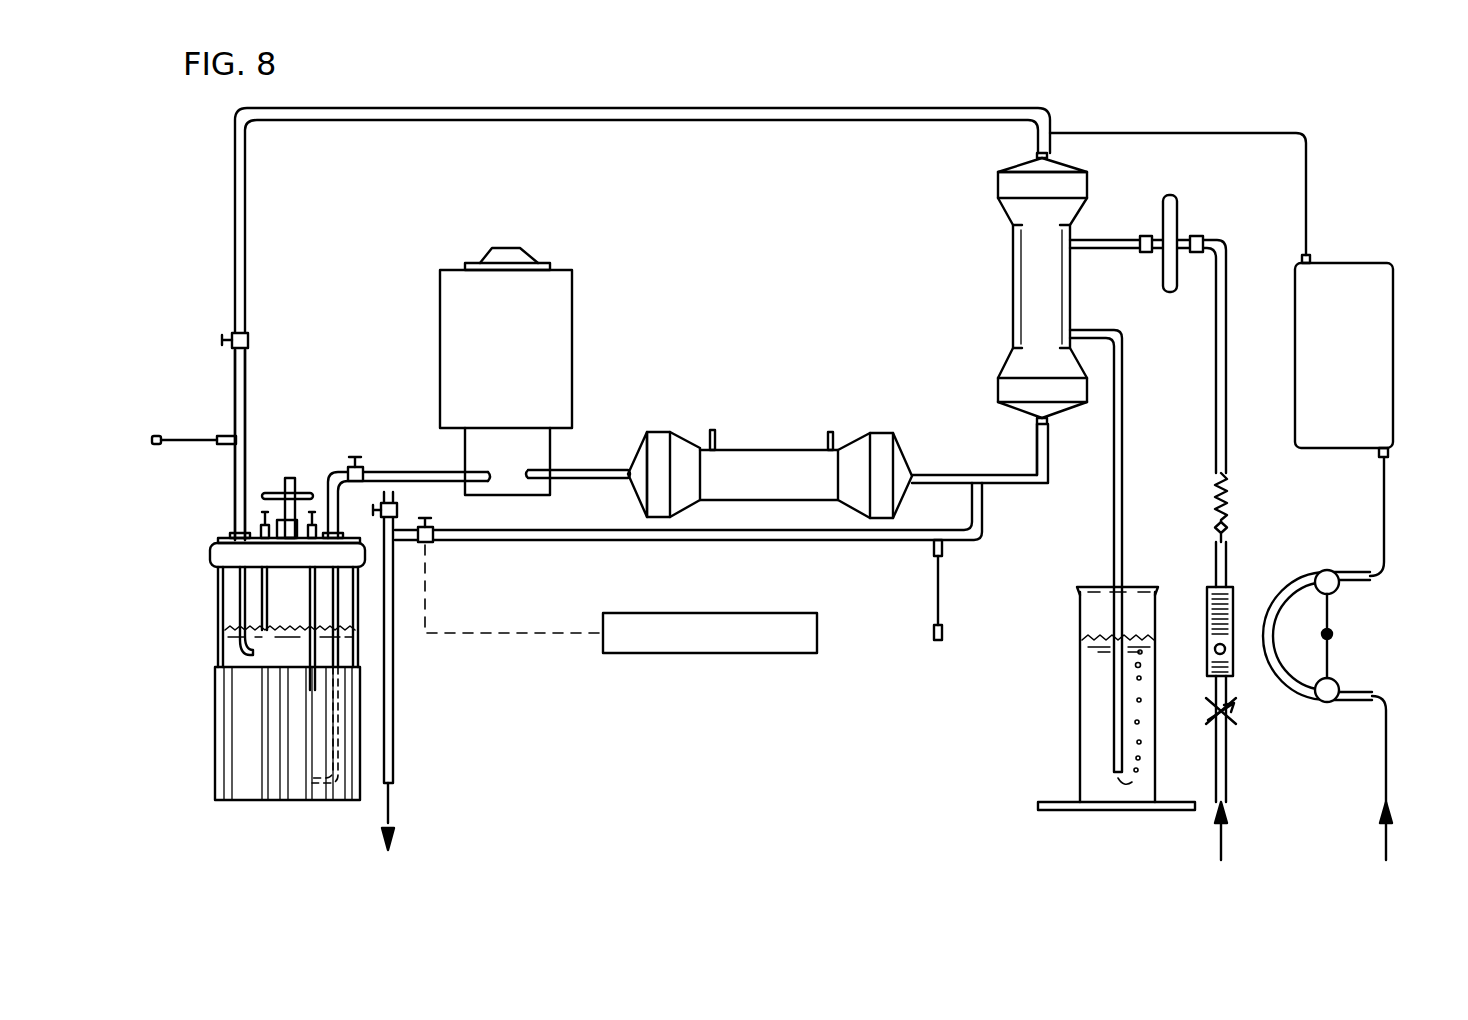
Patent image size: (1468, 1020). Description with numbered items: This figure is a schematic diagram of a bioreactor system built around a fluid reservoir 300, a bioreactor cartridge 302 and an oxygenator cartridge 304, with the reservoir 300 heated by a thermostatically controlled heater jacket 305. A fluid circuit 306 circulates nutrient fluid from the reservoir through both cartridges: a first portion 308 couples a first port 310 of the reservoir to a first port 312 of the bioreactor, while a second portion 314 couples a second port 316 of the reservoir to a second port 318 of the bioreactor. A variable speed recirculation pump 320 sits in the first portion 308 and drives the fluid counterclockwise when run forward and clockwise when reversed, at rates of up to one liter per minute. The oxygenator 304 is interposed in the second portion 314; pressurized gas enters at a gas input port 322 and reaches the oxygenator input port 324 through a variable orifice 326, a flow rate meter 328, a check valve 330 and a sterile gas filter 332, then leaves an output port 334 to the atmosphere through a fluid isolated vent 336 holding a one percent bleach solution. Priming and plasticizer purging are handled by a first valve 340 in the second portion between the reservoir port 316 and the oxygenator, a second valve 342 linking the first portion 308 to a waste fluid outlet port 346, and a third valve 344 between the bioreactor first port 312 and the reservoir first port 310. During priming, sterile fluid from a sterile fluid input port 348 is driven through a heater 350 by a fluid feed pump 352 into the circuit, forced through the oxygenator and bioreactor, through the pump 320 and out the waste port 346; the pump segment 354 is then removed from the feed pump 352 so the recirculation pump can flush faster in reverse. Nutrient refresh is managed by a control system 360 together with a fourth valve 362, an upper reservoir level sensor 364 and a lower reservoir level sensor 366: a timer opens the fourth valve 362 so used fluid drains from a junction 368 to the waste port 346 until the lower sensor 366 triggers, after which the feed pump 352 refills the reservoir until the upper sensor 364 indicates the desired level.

The fluid reservoir 300 is at (218, 608).
The bioreactor cartridge 302 is at (780, 450).
The oxygenator cartridge 304 is at (1013, 290).
The heater jacket 305 is at (215, 770).
The fluid circuit 306 is at (215, 180).
The first portion of fluid circuit 308 is at (583, 447).
The first port of reservoir 310 is at (328, 490).
The first port of bioreactor 312 is at (598, 480).
The second portion of fluid circuit 314 is at (480, 135).
The second port of reservoir 316 is at (237, 513).
The second port of bioreactor 318 is at (945, 475).
The variable speed recirculation pump 320 is at (572, 283).
The gas input port 322 is at (1225, 815).
The input port of oxygenator 324 is at (1104, 250).
The variable orifice 326 is at (1232, 722).
The flow rate meter 328 is at (1233, 612).
The check valve 330 is at (1227, 497).
The sterile gas filter 332 is at (1177, 280).
The output port of oxygenator 334 is at (1123, 362).
The fluid isolated vent 336 is at (1080, 715).
The first valve 340 is at (248, 340).
The second valve 342 is at (397, 510).
The third valve 344 is at (363, 470).
The waste fluid outlet port 346 is at (400, 792).
The sterile fluid input port 348 is at (1390, 827).
The heater 350 is at (1393, 326).
The fluid feed pump 352 is at (1362, 659).
The pump segment 354 is at (1328, 608).
The control system 360 is at (797, 653).
The fourth valve 362 is at (433, 545).
The upper reservoir level sensor 364 is at (355, 640).
The lower reservoir level sensor 366 is at (393, 713).
The junction 368 is at (982, 492).